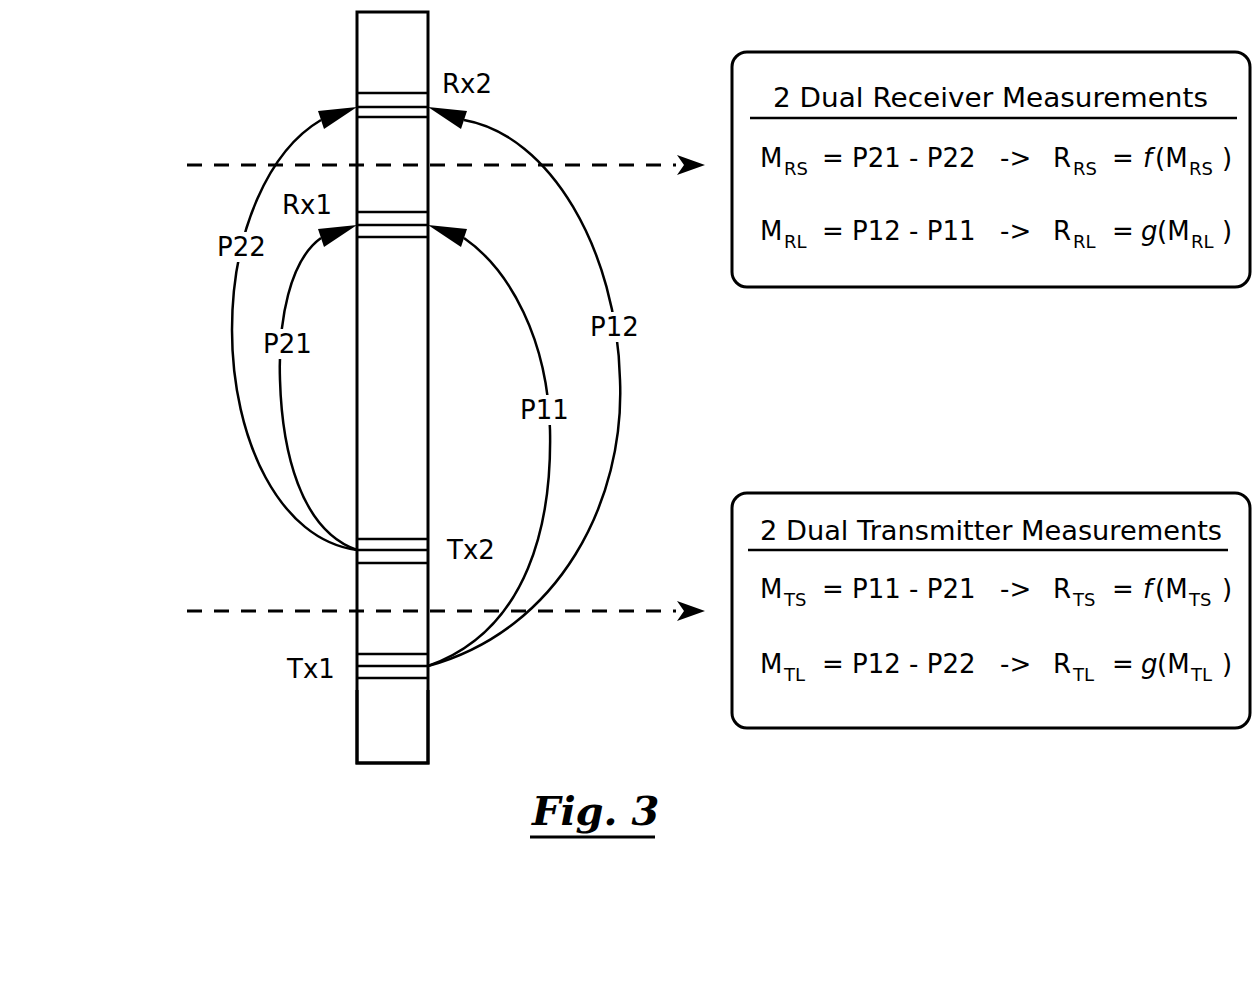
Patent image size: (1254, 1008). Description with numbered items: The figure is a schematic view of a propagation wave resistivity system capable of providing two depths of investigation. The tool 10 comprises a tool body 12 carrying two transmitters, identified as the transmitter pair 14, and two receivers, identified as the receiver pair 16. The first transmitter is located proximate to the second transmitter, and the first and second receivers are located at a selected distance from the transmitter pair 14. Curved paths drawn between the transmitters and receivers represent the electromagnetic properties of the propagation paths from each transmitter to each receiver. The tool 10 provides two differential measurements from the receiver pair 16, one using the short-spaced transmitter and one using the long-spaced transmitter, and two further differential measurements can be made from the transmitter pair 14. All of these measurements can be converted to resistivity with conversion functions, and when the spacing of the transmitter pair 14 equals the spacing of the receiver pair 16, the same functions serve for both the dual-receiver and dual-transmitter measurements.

The tool 10 is at (260, 532).
The tool body 12 is at (357, 718).
The transmitter pair 14 is at (466, 692).
The receiver pair 16 is at (520, 108).